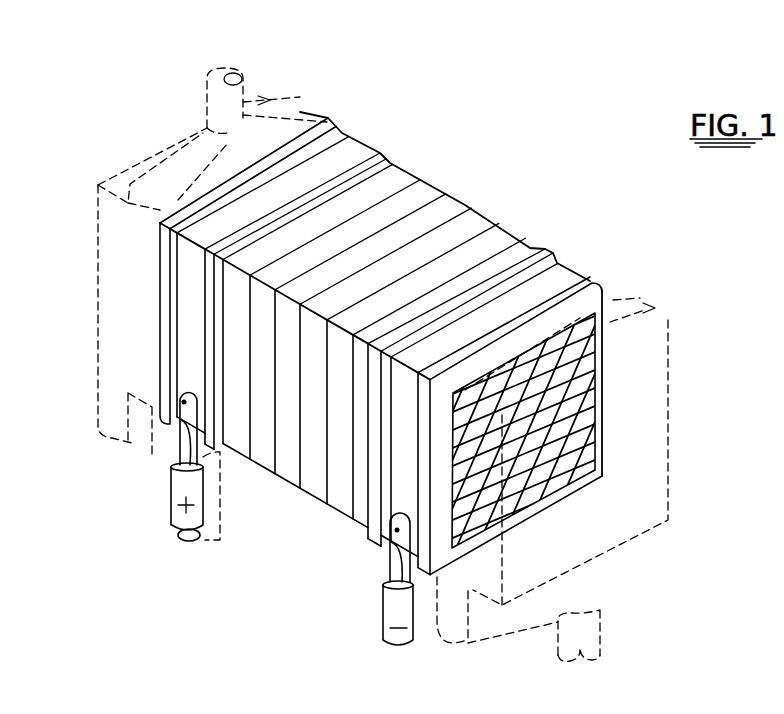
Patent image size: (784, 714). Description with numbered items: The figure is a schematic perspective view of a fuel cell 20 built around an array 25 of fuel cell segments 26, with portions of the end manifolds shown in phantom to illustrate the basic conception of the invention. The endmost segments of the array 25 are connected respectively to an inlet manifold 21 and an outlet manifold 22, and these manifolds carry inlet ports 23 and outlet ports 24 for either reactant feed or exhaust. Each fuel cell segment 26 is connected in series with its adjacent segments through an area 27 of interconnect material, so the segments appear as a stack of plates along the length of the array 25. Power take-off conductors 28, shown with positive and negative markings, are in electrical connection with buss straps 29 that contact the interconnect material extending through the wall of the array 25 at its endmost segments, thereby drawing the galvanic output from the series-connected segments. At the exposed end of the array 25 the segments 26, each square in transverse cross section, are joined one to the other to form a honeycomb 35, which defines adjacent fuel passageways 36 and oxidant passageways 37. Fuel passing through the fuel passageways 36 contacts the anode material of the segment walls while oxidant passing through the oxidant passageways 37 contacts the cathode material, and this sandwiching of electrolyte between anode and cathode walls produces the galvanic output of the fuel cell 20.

The fuel cell 20 is at (82, 126).
The inlet manifold 21 is at (645, 310).
The outlet manifold 22 is at (300, 112).
The inlet ports 23 is at (613, 300).
The outlet ports 24 is at (234, 104).
The array 25 is at (309, 512).
The fuel cell segments 26 is at (415, 200).
The area of interconnect material 27 is at (495, 228).
The power take-off conductors 28 is at (172, 470).
The buss straps 29 is at (345, 160).
The honeycomb 35 is at (614, 378).
The fuel passageways 36 is at (582, 465).
The oxidant passageways 37 is at (585, 440).